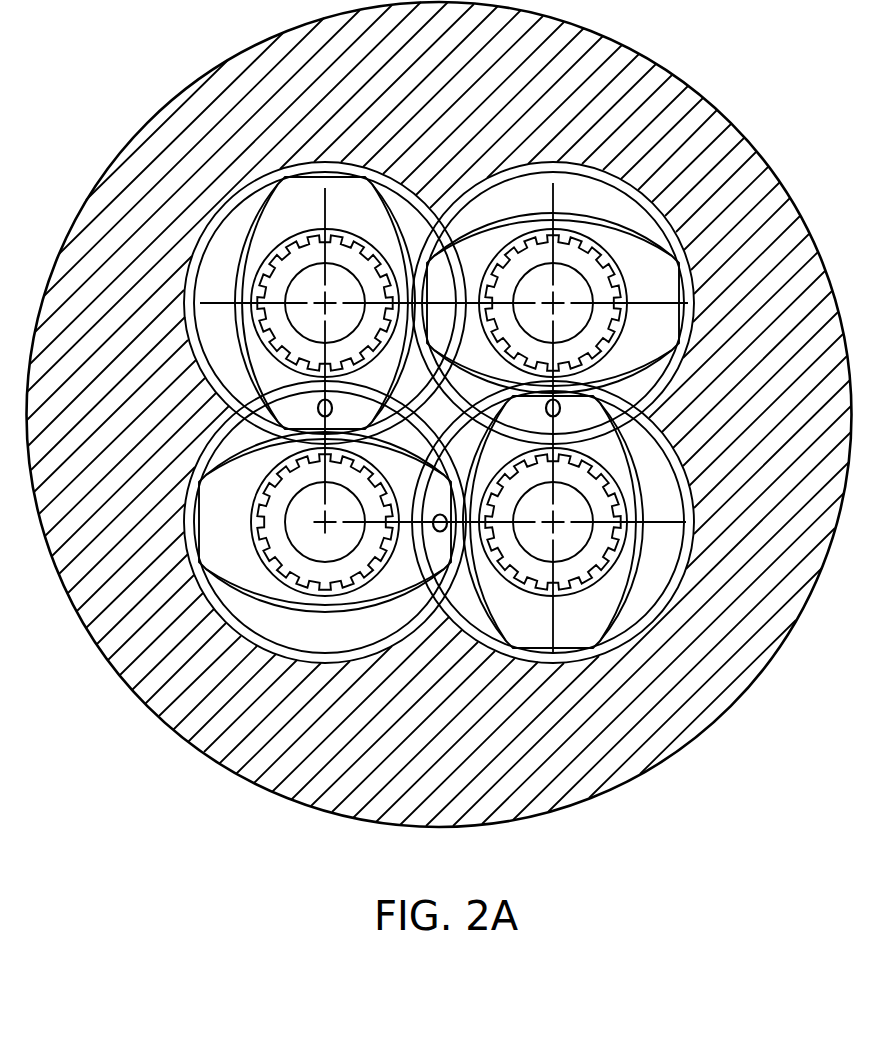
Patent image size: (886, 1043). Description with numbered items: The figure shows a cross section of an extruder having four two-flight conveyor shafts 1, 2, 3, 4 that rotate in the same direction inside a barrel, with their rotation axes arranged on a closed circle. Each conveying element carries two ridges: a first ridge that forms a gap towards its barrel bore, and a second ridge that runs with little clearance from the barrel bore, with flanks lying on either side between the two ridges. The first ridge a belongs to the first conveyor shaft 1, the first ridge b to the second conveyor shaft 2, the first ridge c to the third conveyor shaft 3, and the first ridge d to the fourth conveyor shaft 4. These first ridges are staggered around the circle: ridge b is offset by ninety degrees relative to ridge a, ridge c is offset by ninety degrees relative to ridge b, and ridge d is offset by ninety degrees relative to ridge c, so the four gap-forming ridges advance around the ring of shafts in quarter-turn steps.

The first conveyor shaft 1 is at (431, 452).
The second conveyor shaft 2 is at (439, 414).
The third conveyor shaft 3 is at (148, 90).
The fourth conveyor shaft 4 is at (163, 797).
The first ridge of the first conveyor shaft a is at (325, 303).
The first ridge of the second conveyor shaft b is at (553, 303).
The first ridge of the third conveyor shaft c is at (553, 522).
The first ridge of the fourth conveyor shaft d is at (325, 522).